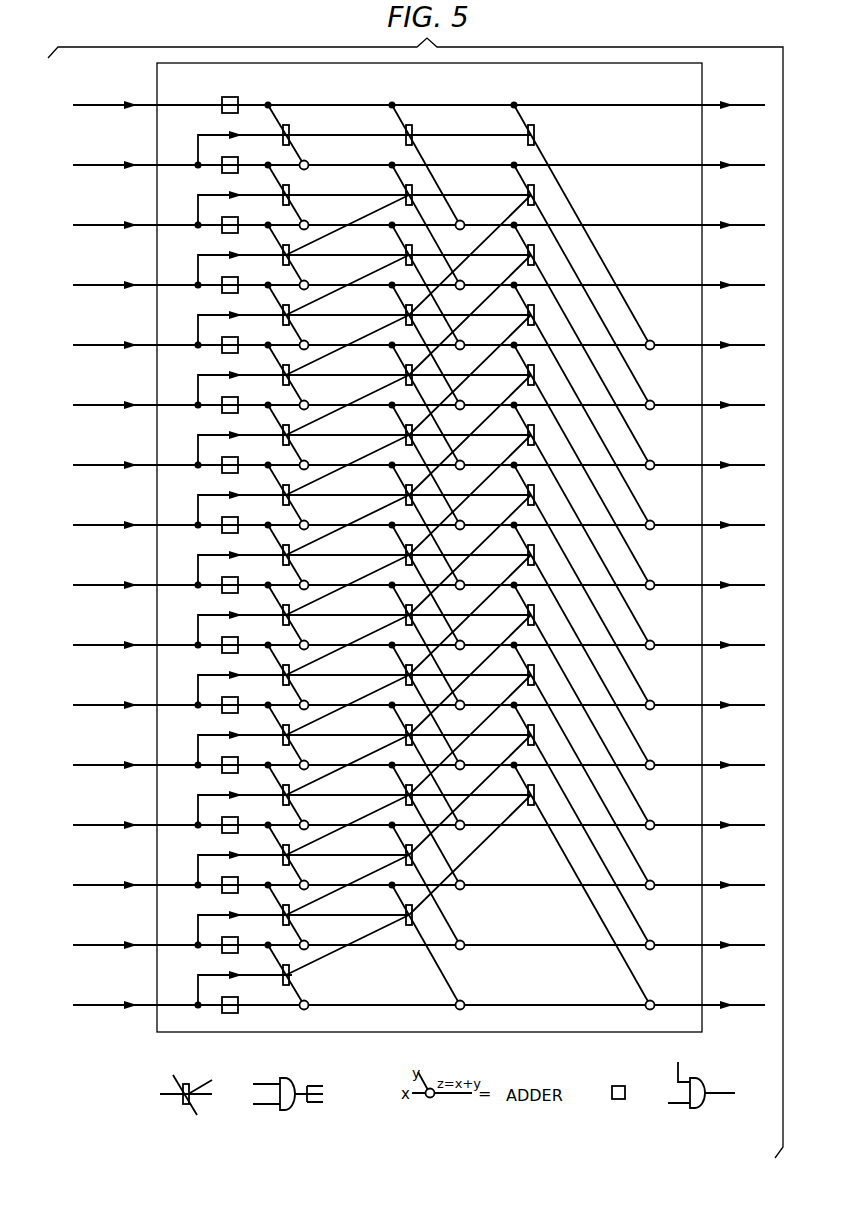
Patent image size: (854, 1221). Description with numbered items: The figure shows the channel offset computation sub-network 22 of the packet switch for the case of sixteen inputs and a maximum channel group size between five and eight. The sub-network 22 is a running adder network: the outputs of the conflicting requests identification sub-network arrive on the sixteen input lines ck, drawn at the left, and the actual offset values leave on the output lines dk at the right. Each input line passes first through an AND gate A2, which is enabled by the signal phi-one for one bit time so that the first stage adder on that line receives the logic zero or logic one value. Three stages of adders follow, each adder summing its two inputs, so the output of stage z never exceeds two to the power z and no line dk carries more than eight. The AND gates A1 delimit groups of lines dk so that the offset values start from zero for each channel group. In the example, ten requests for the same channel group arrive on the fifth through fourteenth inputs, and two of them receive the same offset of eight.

The channel offset computation sub-network 22 is at (104, 1036).
The AND gate A1 is at (289, 1110).
The AND gate A2 is at (699, 1108).